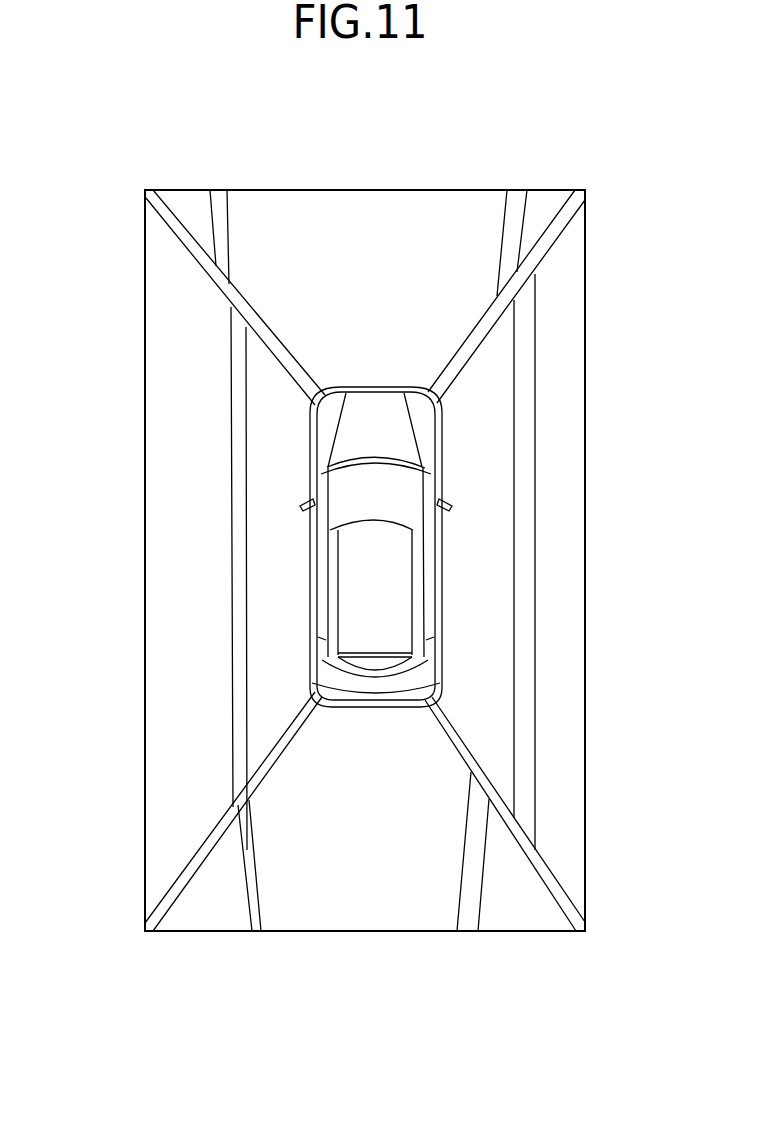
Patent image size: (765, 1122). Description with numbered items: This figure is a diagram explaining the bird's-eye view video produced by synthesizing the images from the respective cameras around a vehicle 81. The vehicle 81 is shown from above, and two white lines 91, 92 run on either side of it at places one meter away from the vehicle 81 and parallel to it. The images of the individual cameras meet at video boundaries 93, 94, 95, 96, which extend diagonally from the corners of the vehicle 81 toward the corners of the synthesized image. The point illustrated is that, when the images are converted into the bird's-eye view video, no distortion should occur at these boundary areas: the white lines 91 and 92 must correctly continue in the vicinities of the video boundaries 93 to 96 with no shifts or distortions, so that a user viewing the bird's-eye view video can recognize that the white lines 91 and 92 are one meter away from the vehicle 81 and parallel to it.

The vehicle 81 is at (378, 598).
The white line 91 is at (218, 204).
The white line 92 is at (517, 212).
The video boundary 93 is at (185, 248).
The video boundary 94 is at (192, 860).
The video boundary 95 is at (557, 228).
The video boundary 96 is at (557, 888).